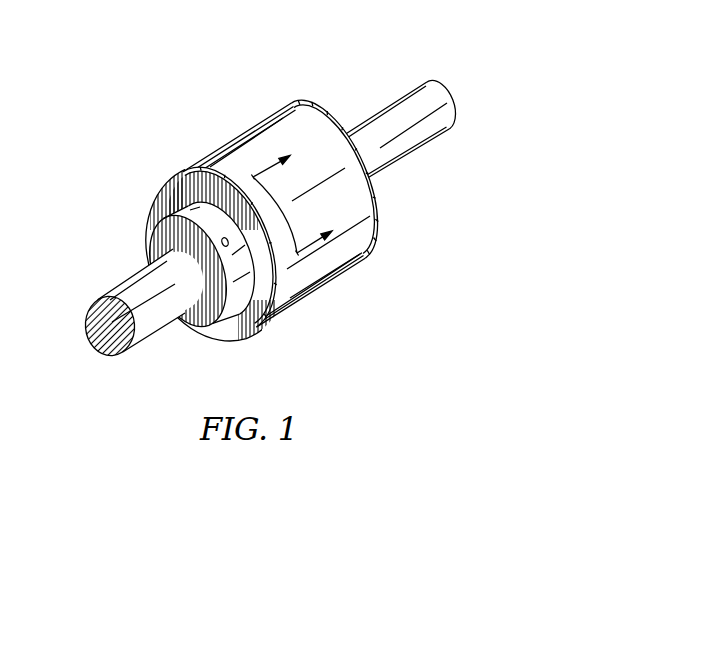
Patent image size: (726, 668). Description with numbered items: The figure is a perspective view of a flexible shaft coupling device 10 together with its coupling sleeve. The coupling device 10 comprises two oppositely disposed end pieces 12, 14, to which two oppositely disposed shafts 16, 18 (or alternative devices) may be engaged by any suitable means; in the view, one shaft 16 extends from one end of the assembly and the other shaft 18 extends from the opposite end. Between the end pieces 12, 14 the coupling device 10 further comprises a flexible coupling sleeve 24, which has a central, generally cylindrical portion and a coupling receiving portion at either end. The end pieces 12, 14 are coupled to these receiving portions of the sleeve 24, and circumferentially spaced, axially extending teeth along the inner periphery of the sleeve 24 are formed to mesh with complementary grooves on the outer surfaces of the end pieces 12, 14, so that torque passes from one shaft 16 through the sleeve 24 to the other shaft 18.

The flexible shaft coupling device 10 is at (272, 178).
The end piece 12 is at (331, 122).
The end piece 14 is at (172, 192).
The shaft 16 is at (430, 125).
The shaft 18 is at (123, 287).
The flexible coupling sleeve 24 is at (253, 148).